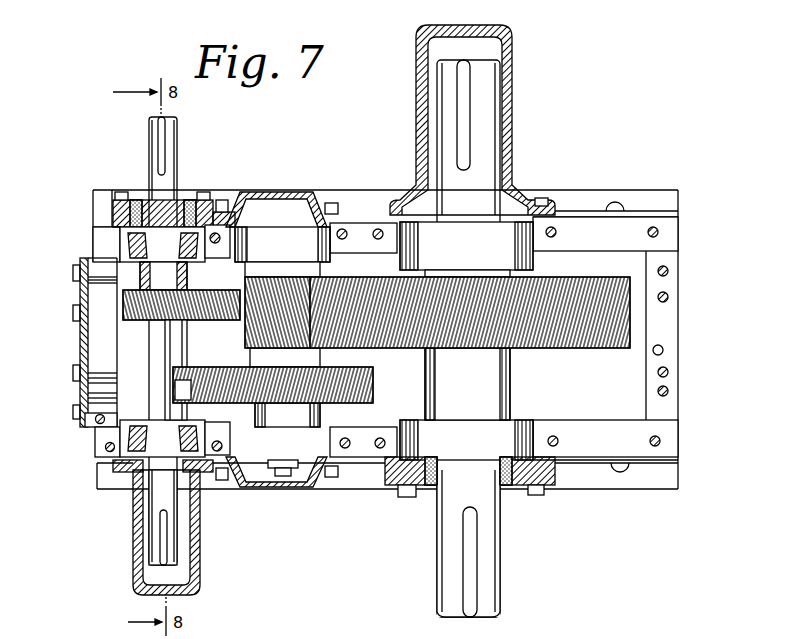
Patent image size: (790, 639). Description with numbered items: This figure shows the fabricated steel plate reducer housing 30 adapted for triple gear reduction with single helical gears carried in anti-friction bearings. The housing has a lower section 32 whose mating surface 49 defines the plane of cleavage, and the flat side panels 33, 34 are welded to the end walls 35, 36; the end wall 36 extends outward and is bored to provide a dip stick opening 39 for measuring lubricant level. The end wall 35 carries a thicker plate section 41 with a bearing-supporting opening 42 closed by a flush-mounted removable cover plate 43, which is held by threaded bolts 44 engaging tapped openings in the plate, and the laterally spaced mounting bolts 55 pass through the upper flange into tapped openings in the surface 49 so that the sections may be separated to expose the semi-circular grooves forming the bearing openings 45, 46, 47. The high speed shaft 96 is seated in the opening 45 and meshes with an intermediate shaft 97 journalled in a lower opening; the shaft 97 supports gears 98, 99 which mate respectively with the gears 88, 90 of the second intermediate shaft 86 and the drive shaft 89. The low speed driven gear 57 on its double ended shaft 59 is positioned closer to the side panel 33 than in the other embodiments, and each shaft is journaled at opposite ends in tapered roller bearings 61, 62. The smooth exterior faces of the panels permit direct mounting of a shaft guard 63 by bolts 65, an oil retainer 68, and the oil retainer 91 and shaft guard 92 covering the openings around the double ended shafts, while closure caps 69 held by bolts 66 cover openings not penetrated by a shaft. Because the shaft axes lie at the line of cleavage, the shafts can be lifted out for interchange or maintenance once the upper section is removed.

The reducer housing 30 is at (92, 201).
The lower section 32 is at (659, 190).
The side panel 33 is at (97, 248).
The side panel 34 is at (100, 437).
The end wall 35 is at (88, 430).
The end wall 36 is at (672, 410).
The dip stick opening 39 is at (664, 348).
The thicker plate section 41 is at (88, 263).
The bearing-supporting opening 42 is at (80, 300).
The removable cover plate 43 is at (80, 332).
The bolts 44 is at (75, 416).
The bearing opening 45 is at (120, 232).
The bearing opening 46 is at (314, 226).
The bearing opening 47 is at (402, 256).
The mating surface 49 is at (582, 215).
The mounting bolts 55 is at (659, 231).
The low speed driven gear 57 is at (560, 350).
The shaft 59 is at (497, 562).
The tapered roller bearings 61 is at (537, 237).
The tapered roller bearings 62 is at (333, 250).
The shaft guard 63 is at (512, 135).
The mounting bolts 65 is at (542, 198).
The mounting bolts 66 is at (331, 203).
The oil retainer 68 is at (538, 474).
The closure cap 69 is at (280, 192).
The intermediate shaft 86 is at (284, 482).
The gear member 88 is at (370, 378).
The drive shaft 89 is at (310, 280).
The gear 90 is at (150, 320).
The oil retainer 91 is at (207, 208).
The shaft guard 92 is at (133, 530).
The high speed shaft 96 is at (149, 158).
The intermediate shaft 97 is at (175, 353).
The gear 98 is at (176, 390).
The gear 99 is at (238, 320).